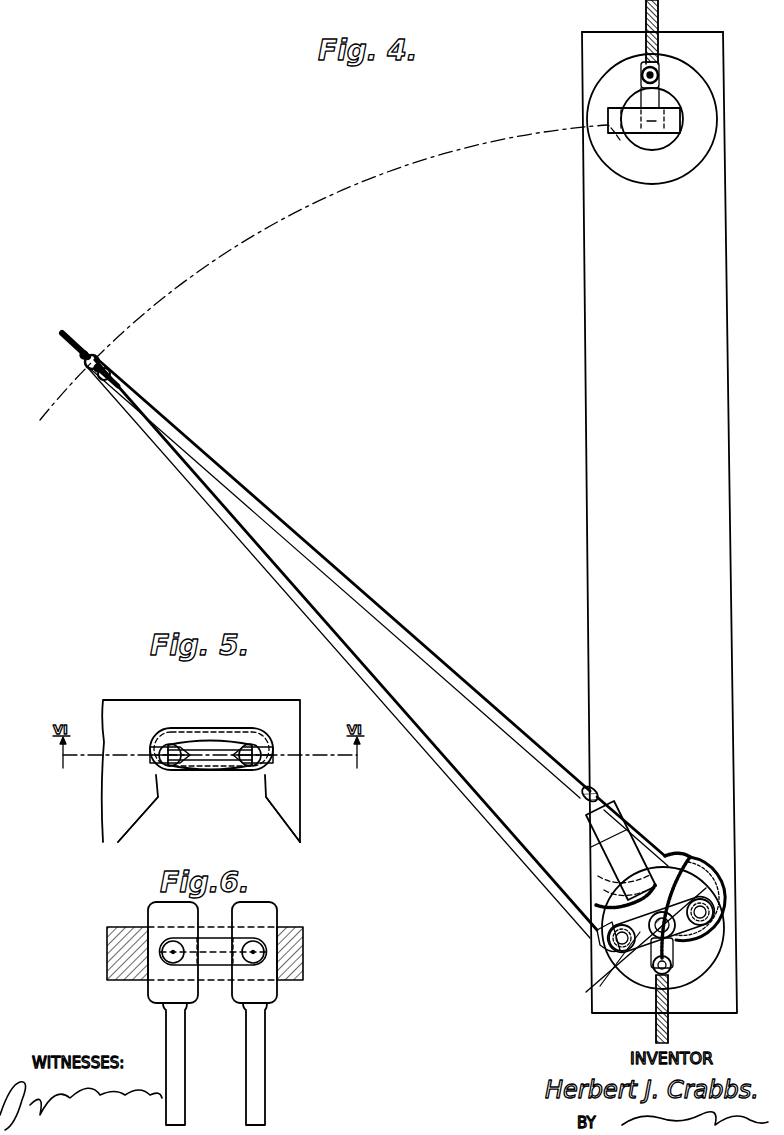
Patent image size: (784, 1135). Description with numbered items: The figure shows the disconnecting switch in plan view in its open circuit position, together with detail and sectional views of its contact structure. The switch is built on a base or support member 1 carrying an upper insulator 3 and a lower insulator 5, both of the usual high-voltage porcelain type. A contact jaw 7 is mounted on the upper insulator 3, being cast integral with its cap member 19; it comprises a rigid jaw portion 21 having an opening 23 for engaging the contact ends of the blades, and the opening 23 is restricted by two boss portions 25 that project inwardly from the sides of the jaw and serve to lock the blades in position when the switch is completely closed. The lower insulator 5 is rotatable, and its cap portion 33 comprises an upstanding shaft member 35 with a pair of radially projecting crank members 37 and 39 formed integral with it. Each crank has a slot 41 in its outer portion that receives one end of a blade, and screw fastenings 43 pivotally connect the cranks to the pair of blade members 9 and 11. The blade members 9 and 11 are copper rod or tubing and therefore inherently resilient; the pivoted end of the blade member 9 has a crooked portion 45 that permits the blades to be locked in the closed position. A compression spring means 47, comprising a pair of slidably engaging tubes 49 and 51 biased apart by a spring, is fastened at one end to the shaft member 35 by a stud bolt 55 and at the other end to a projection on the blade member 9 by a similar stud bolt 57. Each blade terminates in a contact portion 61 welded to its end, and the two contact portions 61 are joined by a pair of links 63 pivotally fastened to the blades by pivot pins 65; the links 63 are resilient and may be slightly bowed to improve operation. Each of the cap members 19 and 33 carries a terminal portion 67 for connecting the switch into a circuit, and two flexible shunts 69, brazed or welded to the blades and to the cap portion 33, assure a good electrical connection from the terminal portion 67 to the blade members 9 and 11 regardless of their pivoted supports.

In FIG. 4, the base or support member 1 is at (585, 290).
In FIG. 4, the upper insulator 3 is at (592, 84).
In FIG. 4, the lower insulator 5 is at (628, 955).
In FIG. 4, the contact jaw 7 is at (610, 63).
In FIG. 5, the contact jaw 7 is at (88, 694).
In FIG. 6, the contact jaw 7 is at (86, 922).
In FIG. 4, the blade member 9 is at (289, 530).
In FIG. 6, the blade member 9 is at (265, 1053).
In FIG. 4, the blade member 11 is at (228, 524).
In FIG. 6, the blade member 11 is at (178, 1055).
In FIG. 4, the cap member 19 is at (652, 152).
In FIG. 4, the rigid jaw portion 21 is at (608, 118).
In FIG. 5, the rigid jaw portion 21 is at (238, 700).
In FIG. 6, the rigid jaw portion 21 is at (303, 937).
In FIG. 4, the opening 23 is at (622, 142).
In FIG. 5, the opening 23 is at (248, 728).
In FIG. 6, the opening 23 is at (215, 982).
In FIG. 5, the boss portions 25 is at (162, 802).
In FIG. 4, the cap portion 33 is at (586, 992).
In FIG. 4, the upstanding shaft member 35 is at (690, 925).
In FIG. 4, the crank member 37 is at (600, 925).
In FIG. 4, the crank member 39 is at (672, 912).
In FIG. 4, the slot 41 is at (716, 870).
In FIG. 4, the screw fastenings 43 is at (713, 910).
In FIG. 4, the crooked portion 45 is at (720, 852).
In FIG. 4, the compression spring means 47 is at (628, 861).
In FIG. 4, the tube 49 is at (610, 810).
In FIG. 4, the tube 51 is at (628, 838).
In FIG. 4, the stud bolt 55 is at (690, 974).
In FIG. 4, the stud bolt 57 is at (593, 790).
In FIG. 4, the contact portion 61 is at (95, 350).
In FIG. 5, the contact portion 61 is at (153, 742).
In FIG. 6, the contact portion 61 is at (148, 914).
In FIG. 4, the links 63 is at (100, 360).
In FIG. 5, the links 63 is at (210, 742).
In FIG. 6, the links 63 is at (210, 940).
In FIG. 4, the pivot pins 65 is at (78, 358).
In FIG. 5, the pivot pins 65 is at (172, 767).
In FIG. 6, the pivot pins 65 is at (162, 952).
In FIG. 4, the terminal portion 67 is at (660, 78).
In FIG. 4, the flexible shunts 69 is at (596, 904).